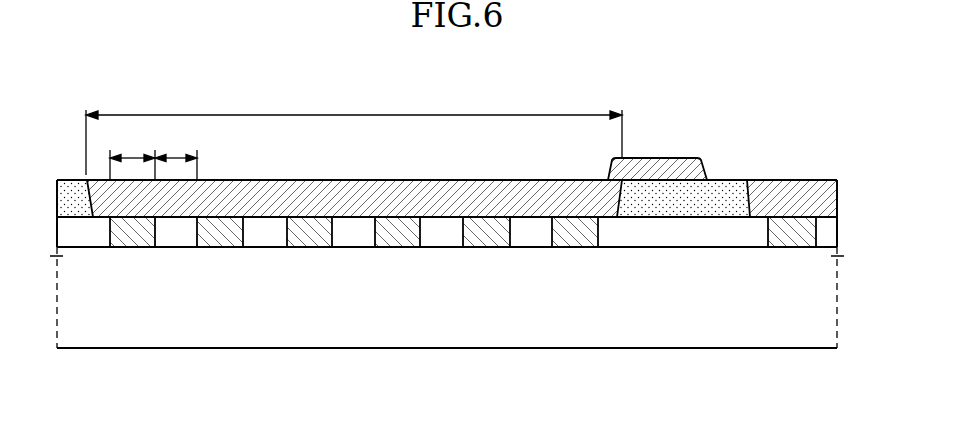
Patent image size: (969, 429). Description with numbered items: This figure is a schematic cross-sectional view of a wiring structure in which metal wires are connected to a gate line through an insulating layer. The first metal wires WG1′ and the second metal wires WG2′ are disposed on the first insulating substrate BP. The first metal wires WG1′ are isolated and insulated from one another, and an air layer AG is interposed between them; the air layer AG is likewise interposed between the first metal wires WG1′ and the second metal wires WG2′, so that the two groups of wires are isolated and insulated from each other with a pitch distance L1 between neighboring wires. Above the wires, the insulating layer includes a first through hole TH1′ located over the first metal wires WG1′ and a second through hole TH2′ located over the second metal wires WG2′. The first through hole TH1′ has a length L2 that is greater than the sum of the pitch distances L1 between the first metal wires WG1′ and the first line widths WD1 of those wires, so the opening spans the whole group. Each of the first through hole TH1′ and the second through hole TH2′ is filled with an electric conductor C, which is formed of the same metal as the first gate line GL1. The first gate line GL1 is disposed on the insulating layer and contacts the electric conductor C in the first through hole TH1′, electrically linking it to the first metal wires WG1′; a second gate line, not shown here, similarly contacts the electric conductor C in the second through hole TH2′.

The first insulating substrate BP is at (833, 300).
The electric conductor C is at (447, 190).
The first through hole TH1′ is at (83, 199).
The second through hole TH2′ is at (750, 198).
The first gate line GL1 is at (657, 165).
The first metal wires WG1′ is at (573, 237).
The second metal wires WG2′ is at (793, 238).
The air layer AG is at (80, 238).
The pitch distance L1 is at (176, 153).
The length of first through hole L2 is at (354, 130).
The first line width WD1 is at (131, 153).